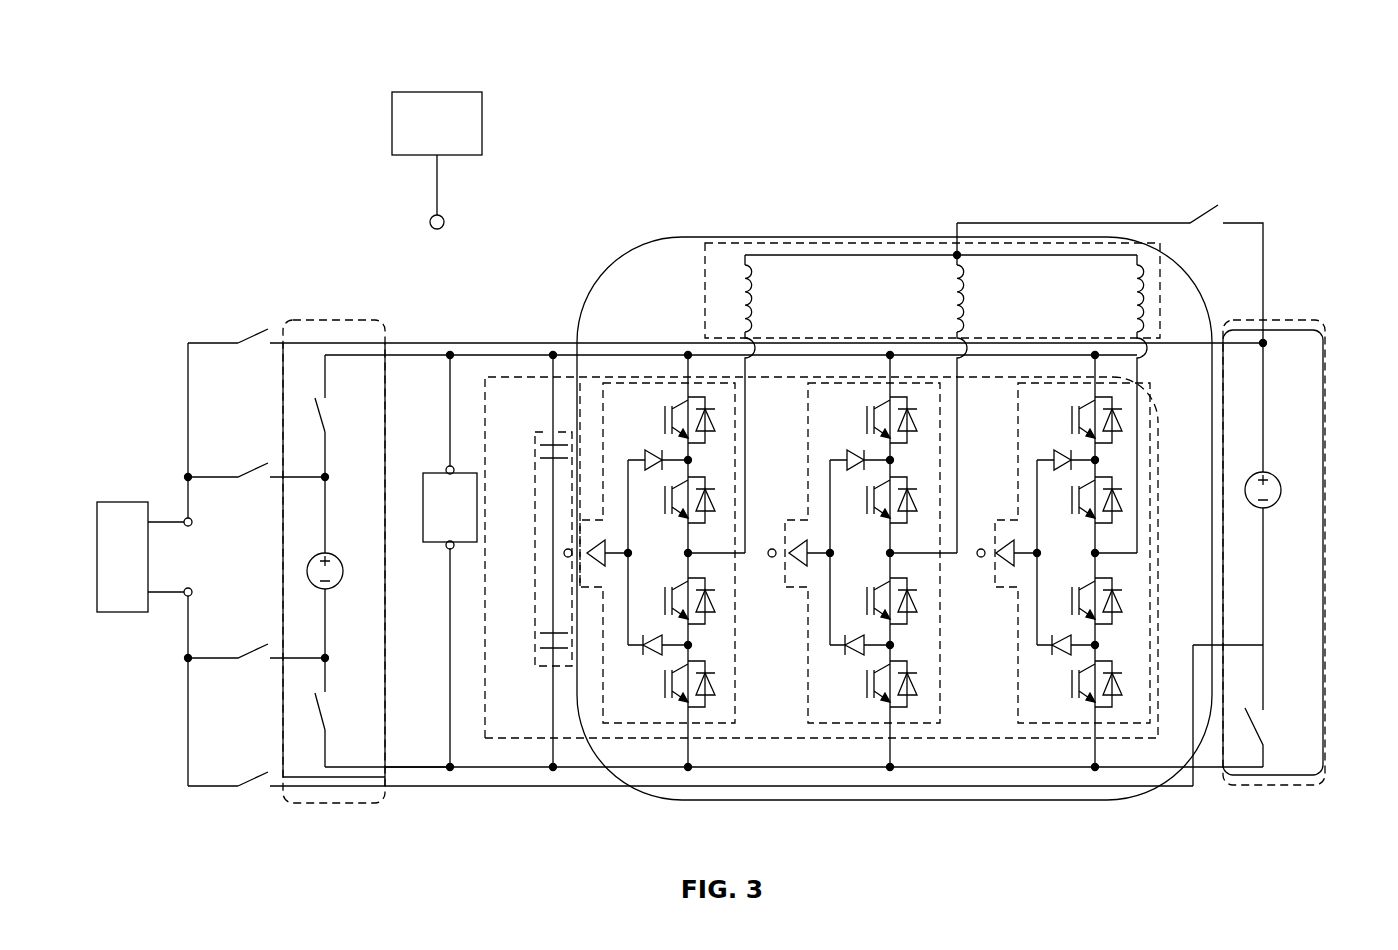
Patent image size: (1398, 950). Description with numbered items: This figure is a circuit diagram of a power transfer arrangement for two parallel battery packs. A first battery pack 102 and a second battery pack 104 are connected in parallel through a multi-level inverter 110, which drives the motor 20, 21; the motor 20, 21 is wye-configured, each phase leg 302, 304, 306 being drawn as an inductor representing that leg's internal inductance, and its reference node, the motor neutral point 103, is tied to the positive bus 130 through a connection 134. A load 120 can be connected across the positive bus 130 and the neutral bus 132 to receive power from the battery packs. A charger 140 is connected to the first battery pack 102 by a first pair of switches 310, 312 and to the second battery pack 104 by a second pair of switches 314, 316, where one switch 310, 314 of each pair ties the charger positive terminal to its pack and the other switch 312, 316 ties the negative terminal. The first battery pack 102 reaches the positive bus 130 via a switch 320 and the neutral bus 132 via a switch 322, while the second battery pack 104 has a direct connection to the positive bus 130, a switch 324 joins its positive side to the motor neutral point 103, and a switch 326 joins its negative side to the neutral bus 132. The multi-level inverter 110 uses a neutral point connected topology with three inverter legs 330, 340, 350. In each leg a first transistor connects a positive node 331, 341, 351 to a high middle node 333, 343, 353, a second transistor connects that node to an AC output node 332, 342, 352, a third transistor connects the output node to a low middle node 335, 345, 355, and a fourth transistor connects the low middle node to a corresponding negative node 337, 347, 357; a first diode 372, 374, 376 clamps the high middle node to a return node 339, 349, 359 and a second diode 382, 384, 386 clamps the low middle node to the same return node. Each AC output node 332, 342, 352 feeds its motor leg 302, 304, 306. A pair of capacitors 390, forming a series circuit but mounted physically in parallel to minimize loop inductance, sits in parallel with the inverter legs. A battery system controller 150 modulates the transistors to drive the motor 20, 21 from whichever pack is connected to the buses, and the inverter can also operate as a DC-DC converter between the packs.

The motor 20 is at (860, 243).
The motor 21 is at (941, 206).
The first battery pack 102 is at (325, 320).
The motor neutral point 103 is at (955, 253).
The second battery pack 104 is at (1292, 320).
The multi-level inverter 110 is at (668, 383).
The load 120 is at (432, 522).
The positive bus 130 is at (483, 377).
The neutral bus 132 is at (500, 768).
The connection 134 is at (1245, 223).
The charger 140 is at (97, 565).
The battery system controller 150 is at (437, 92).
The phase leg 302 is at (758, 300).
The phase leg 304 is at (993, 272).
The phase leg 306 is at (1133, 255).
The switch 310 is at (265, 465).
The switch 312 is at (266, 645).
The switch 314 is at (266, 330).
The switch 316 is at (266, 773).
The switch 320 is at (315, 405).
The switch 322 is at (315, 702).
The switch 324 is at (1198, 232).
The switch 326 is at (1262, 735).
The inverter leg 330 is at (643, 382).
The positive node 331 is at (688, 352).
The AC output node 332 is at (692, 557).
The high middle node 333 is at (692, 462).
The low middle node 335 is at (692, 648).
The first leg negative connection 337 is at (688, 768).
The return node 339 is at (628, 555).
The inverter leg 340 is at (862, 383).
The positive node 341 is at (888, 353).
The AC output node 342 is at (894, 557).
The high middle node 343 is at (894, 462).
The low middle node 345 is at (894, 648).
The second leg negative connection 347 is at (890, 768).
The return node 349 is at (830, 556).
The inverter leg 350 is at (1072, 388).
The positive node 351 is at (1093, 353).
The AC output node 352 is at (1099, 557).
The high middle node 353 is at (1099, 462).
The low middle node 355 is at (1099, 645).
The third leg negative connection 357 is at (1095, 768).
The return node 359 is at (1037, 556).
The first diode 372 is at (650, 452).
The first diode 374 is at (852, 452).
The first diode 376 is at (1060, 452).
The second diode 382 is at (652, 660).
The second diode 384 is at (854, 660).
The second diode 386 is at (1060, 660).
The pair of capacitors 390 is at (545, 433).